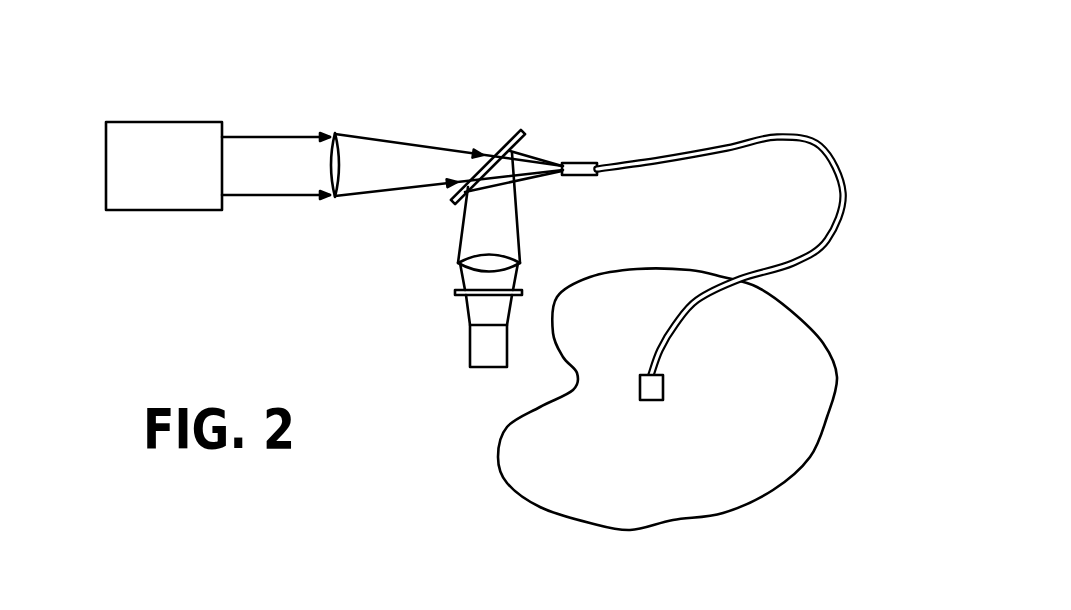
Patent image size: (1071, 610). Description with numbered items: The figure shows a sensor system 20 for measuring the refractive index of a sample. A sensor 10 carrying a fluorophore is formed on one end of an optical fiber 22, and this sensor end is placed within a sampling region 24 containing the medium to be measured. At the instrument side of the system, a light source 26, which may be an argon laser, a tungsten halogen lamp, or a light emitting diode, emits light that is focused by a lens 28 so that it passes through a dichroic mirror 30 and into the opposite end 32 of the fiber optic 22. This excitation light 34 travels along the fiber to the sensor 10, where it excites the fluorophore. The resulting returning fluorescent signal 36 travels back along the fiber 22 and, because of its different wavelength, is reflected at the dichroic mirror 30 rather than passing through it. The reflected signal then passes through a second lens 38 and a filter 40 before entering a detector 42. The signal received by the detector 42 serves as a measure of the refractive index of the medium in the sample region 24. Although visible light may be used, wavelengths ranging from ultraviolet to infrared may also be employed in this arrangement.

The sensor 10 is at (664, 389).
The sensor system 20 is at (722, 103).
The optical fiber 22 is at (813, 147).
The sampling region 24 is at (694, 475).
The light source 26 is at (172, 122).
The lens 28 is at (337, 133).
The dichroic mirror 30 is at (509, 146).
The opposite end of fiber optic 32 is at (594, 163).
The excitation light 34 is at (541, 160).
The returning fluorescent signal 36 is at (538, 178).
The lens 38 is at (458, 262).
The filter 40 is at (456, 294).
The detector 42 is at (470, 353).